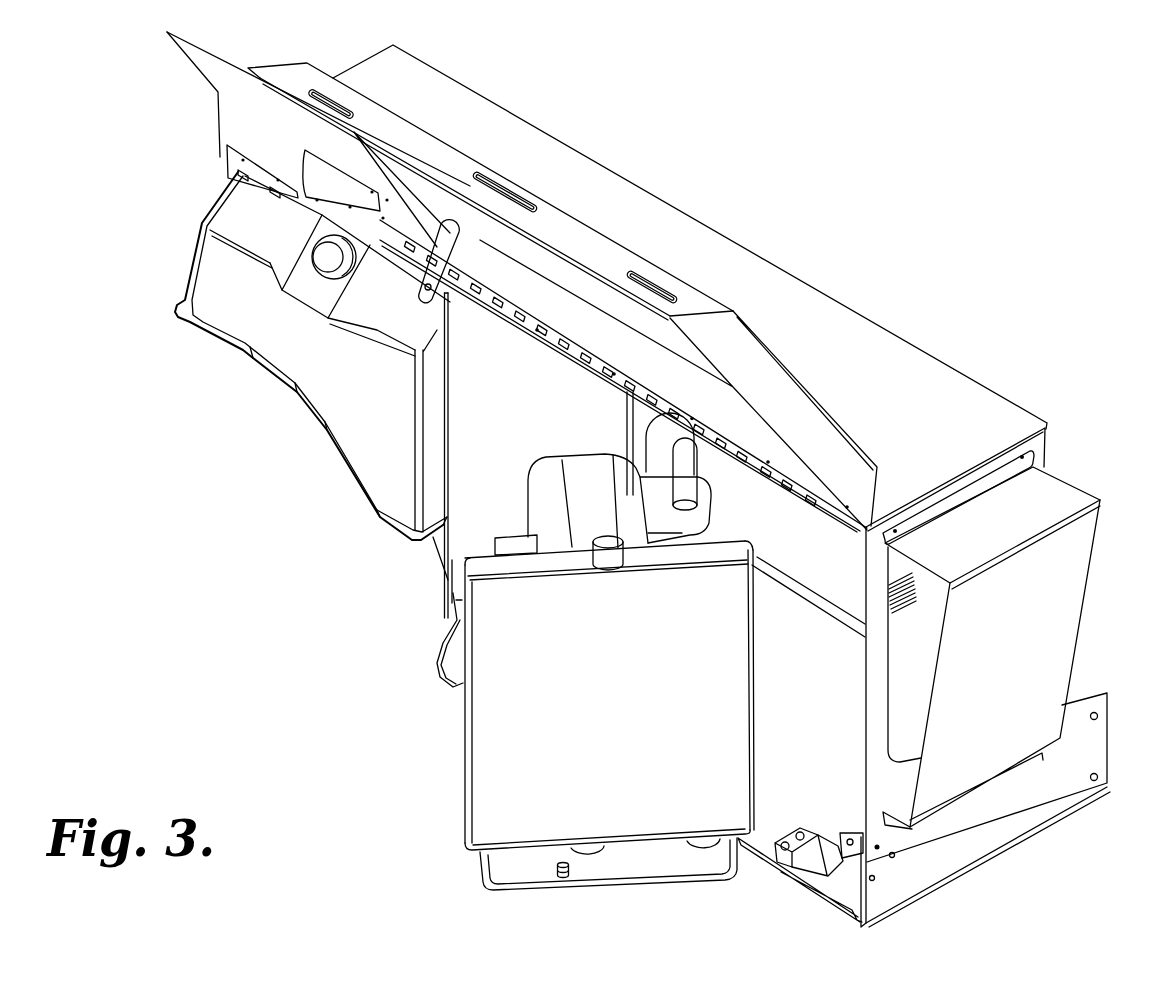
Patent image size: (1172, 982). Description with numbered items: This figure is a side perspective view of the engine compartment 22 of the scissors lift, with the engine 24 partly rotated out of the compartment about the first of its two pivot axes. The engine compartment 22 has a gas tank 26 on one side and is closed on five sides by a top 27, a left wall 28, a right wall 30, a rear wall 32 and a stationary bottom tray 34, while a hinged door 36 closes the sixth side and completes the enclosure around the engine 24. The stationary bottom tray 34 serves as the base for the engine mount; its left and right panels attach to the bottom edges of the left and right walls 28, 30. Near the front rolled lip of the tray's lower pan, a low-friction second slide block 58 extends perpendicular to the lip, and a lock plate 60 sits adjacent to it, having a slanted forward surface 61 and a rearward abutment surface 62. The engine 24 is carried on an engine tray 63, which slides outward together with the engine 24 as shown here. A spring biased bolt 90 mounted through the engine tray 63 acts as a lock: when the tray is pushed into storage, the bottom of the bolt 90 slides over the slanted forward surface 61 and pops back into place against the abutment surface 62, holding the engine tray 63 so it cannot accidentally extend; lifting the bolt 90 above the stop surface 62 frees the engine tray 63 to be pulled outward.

The engine compartment 22 is at (974, 172).
The engine 24 is at (592, 518).
The gas tank 26 is at (327, 366).
The top 27 is at (747, 277).
The left wall 28 is at (541, 421).
The right wall 30 is at (1040, 442).
The rear wall 32 is at (771, 540).
The stationary bottom tray 34 is at (778, 709).
The hinged door 36 is at (555, 222).
The second slide block 58 is at (788, 840).
The lock plate 60 is at (843, 860).
The slanted forward surface 61 is at (820, 867).
The rearward abutment surface 62 is at (828, 833).
The engine tray 63 is at (638, 868).
The spring biased bolt 90 is at (562, 876).